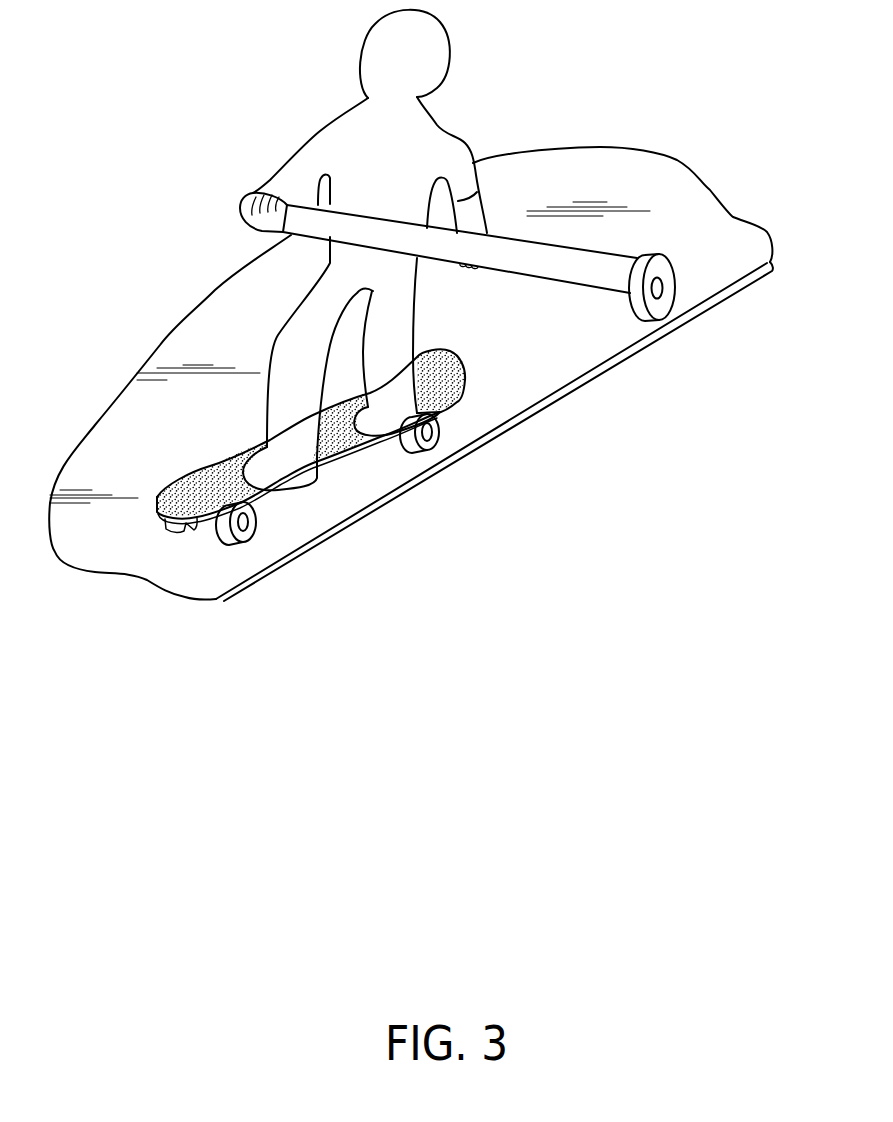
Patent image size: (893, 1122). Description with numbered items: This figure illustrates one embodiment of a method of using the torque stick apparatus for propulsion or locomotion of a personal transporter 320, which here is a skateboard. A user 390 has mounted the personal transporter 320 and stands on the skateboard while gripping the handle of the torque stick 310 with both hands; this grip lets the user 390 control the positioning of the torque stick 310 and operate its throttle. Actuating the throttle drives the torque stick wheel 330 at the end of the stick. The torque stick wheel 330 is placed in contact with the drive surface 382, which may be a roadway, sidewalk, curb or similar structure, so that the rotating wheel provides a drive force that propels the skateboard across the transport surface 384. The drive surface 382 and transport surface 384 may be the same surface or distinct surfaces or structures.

The torque stick 310 is at (318, 205).
The personal transporter 320 is at (453, 353).
The torque stick wheel 330 is at (660, 255).
The drive surface 382 is at (610, 358).
The transport surface 384 is at (237, 559).
The user 390 is at (450, 53).